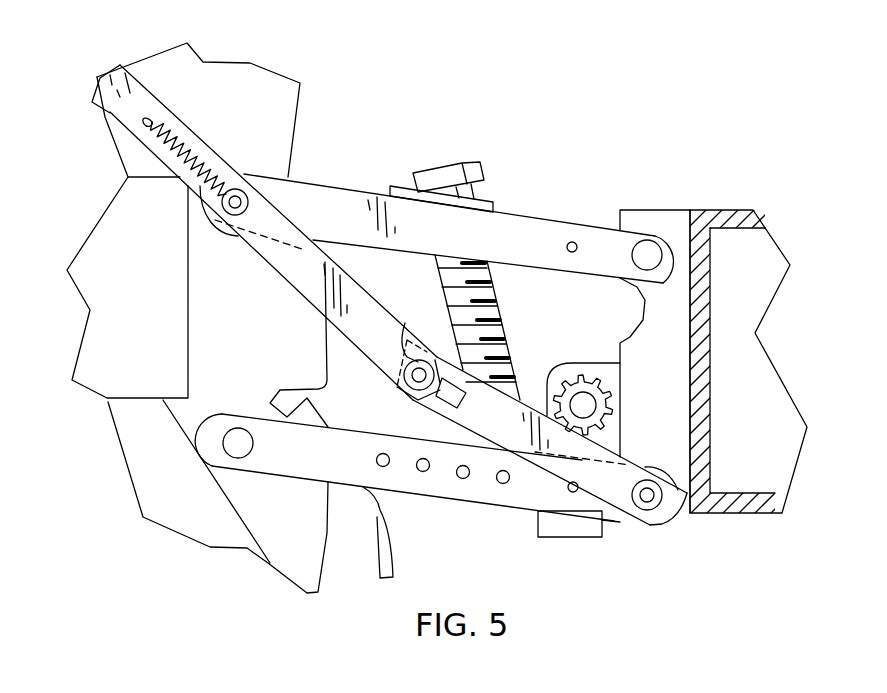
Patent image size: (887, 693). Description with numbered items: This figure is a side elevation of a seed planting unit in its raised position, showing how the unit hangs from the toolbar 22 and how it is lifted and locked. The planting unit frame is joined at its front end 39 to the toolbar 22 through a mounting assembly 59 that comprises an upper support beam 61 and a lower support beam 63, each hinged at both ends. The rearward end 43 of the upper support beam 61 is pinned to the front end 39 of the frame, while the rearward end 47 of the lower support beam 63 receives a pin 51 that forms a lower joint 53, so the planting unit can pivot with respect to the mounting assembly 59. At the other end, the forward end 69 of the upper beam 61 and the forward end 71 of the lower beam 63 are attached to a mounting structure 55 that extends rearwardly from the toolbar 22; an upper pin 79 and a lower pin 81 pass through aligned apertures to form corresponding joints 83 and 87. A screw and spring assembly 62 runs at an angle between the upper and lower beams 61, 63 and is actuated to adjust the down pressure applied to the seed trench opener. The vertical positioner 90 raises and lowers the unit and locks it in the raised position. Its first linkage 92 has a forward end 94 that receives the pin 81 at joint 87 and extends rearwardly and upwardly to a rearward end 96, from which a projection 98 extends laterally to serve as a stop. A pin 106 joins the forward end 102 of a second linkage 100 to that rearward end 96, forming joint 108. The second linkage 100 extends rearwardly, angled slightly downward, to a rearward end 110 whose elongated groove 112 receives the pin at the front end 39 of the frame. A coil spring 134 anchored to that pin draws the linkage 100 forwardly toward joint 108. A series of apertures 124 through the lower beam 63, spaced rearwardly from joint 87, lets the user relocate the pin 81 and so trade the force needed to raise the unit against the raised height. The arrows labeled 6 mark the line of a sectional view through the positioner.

The section line 6- 6 is at (122, 88).
The toolbar 22 is at (721, 209).
The front end 39 is at (304, 362).
The rearward end 43 is at (288, 166).
The rearward end 47 is at (267, 476).
The pin 51 is at (253, 446).
The joint 53 is at (230, 427).
The mounting structure 55 is at (674, 210).
The mounting assembly 59 is at (521, 174).
The upper support beam 61 is at (538, 207).
The screw and spring assembly 62 is at (502, 316).
The lower support beam 63 is at (437, 499).
The forward end 69 is at (587, 280).
The forward end 71 is at (617, 524).
The upper pin 79 is at (645, 239).
The lower pin 81 is at (668, 503).
The joint 83 is at (626, 248).
The joint 87 is at (647, 512).
The vertical positioner 90 is at (279, 308).
The first linkage 92 is at (537, 470).
The forward end 94 is at (631, 463).
The rearward end 96 is at (440, 405).
The projection 98 is at (460, 403).
The second linkage 100 is at (279, 195).
The forward end 102 is at (357, 357).
The pin 106 is at (438, 355).
The joint 108 is at (402, 350).
The rearward end 110 is at (170, 95).
The elongated groove 112 is at (138, 72).
The apertures 124 is at (572, 492).
The coil spring 134 is at (188, 128).